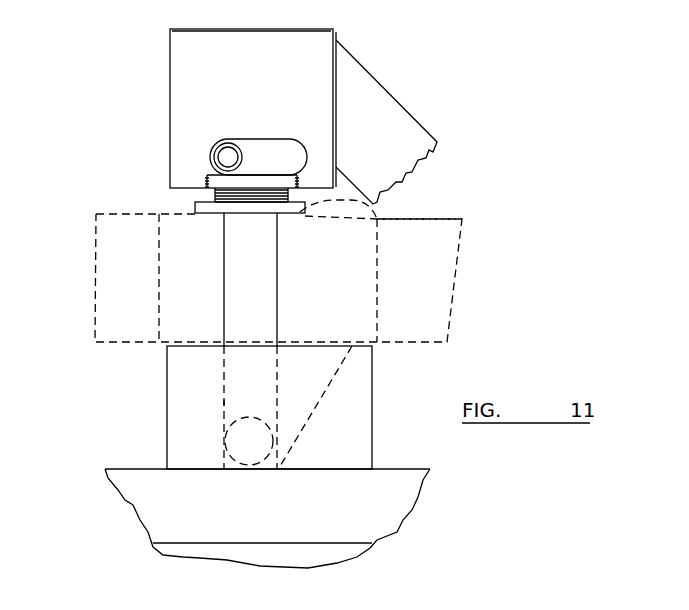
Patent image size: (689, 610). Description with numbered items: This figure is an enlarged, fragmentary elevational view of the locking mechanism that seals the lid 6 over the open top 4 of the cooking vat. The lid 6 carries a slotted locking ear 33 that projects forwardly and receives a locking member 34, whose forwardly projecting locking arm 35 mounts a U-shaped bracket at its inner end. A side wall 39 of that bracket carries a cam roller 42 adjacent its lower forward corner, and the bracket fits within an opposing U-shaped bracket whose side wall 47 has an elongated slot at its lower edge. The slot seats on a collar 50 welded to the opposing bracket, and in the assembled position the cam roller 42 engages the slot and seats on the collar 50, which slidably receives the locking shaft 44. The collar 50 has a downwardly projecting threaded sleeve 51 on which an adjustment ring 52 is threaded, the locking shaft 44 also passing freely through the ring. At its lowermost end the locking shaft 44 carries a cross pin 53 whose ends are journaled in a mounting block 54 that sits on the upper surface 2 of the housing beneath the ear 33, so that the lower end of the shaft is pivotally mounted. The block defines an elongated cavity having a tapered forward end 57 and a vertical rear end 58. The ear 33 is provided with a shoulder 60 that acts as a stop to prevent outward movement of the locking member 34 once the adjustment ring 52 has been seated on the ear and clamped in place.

The upper surface 2 is at (402, 468).
The open top 4 is at (400, 512).
The lid 6 is at (420, 217).
The locking ear 33 is at (183, 272).
The locking member 34 is at (160, 74).
The locking arm 35 is at (373, 97).
The side wall 39 is at (287, 137).
The cam roller 42 is at (231, 139).
The locking shaft 44 is at (278, 276).
The side wall 47 is at (230, 68).
The collar 50 is at (213, 186).
The threaded sleeve 51 is at (215, 193).
The adjustment ring 52 is at (210, 214).
The cross pin 53 is at (250, 457).
The mounting block 54 is at (158, 392).
The tapered forward end 57 is at (315, 403).
The vertical rear end 58 is at (222, 402).
The shoulder 60 is at (323, 203).